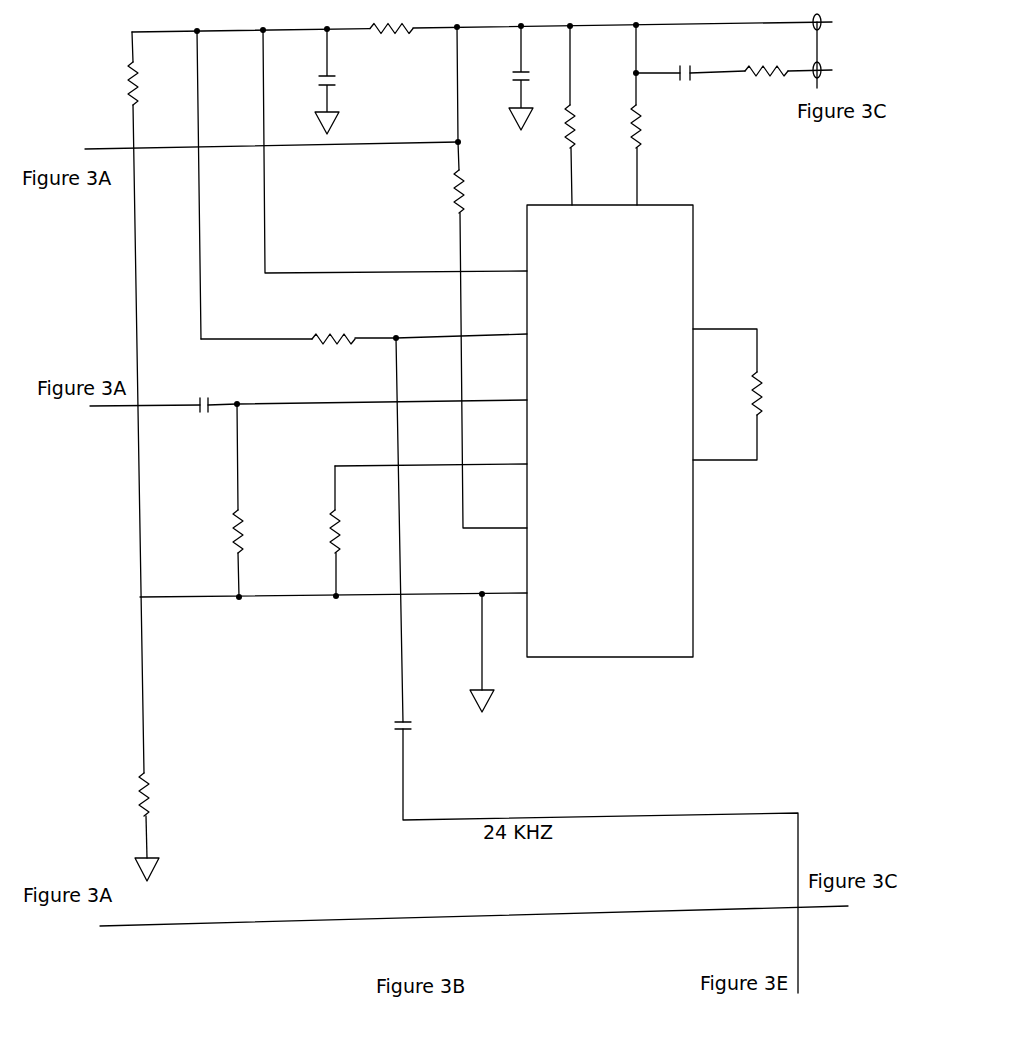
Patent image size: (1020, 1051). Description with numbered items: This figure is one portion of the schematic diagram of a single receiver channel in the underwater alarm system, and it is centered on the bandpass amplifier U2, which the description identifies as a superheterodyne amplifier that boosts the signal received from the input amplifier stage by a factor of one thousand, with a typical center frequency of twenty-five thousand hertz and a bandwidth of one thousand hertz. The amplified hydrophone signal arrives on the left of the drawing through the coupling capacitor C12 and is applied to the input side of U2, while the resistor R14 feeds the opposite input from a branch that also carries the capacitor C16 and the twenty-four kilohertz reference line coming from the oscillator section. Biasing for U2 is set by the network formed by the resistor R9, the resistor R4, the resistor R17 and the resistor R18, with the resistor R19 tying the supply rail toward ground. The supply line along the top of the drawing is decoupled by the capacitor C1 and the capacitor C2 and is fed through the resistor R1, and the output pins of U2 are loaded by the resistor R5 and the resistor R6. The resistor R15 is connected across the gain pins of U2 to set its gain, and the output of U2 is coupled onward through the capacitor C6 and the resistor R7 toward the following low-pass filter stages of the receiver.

The resistor 1.3K R1 is at (391, 28).
The resistor 10K R4 is at (479, 193).
The resistor 3K R5 is at (587, 124).
The resistor 3K R6 is at (653, 124).
The resistor 16.9K R7 is at (763, 72).
The resistor 10K R9 is at (156, 83).
The resistor 51 R14 is at (333, 339).
The resistor 500 R15 is at (777, 394).
The resistor 1K R17 is at (258, 532).
The resistor 1K R18 is at (355, 532).
The resistor 10K R19 is at (168, 796).
The capacitor .01 C1 is at (341, 81).
The capacitor 47 C2 is at (532, 78).
The capacitor .03 C6 is at (691, 72).
The capacitor 1 C12 is at (204, 406).
The capacitor 1 C16 is at (421, 727).
The bandpass amplifier U2 is at (606, 442).